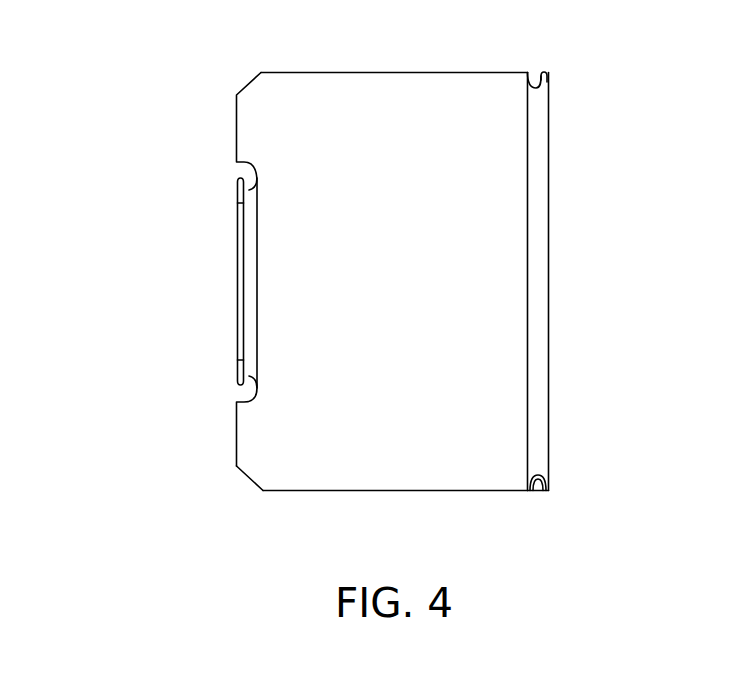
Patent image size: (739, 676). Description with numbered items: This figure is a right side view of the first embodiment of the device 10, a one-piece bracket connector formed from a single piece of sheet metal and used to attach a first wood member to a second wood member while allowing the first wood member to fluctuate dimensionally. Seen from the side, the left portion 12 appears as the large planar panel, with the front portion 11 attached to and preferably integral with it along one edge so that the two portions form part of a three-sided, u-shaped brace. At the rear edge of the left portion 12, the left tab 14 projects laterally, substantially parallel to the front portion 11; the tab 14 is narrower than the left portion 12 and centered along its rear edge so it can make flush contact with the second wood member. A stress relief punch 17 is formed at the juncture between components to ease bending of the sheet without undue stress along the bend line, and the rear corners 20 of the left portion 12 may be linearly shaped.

The bracket connector 10 is at (143, 110).
The front portion 11 is at (549, 255).
The left portion 12 is at (408, 72).
The left tab 14 is at (236, 272).
The stress relief punch 17 is at (550, 58).
The rear corner 20 is at (237, 488).